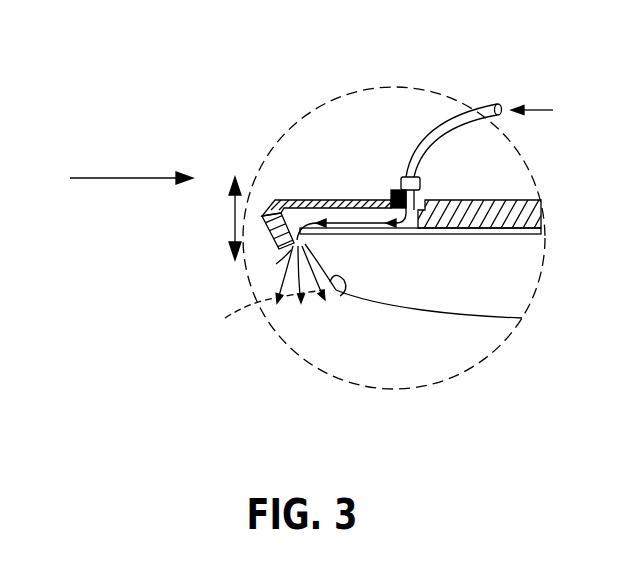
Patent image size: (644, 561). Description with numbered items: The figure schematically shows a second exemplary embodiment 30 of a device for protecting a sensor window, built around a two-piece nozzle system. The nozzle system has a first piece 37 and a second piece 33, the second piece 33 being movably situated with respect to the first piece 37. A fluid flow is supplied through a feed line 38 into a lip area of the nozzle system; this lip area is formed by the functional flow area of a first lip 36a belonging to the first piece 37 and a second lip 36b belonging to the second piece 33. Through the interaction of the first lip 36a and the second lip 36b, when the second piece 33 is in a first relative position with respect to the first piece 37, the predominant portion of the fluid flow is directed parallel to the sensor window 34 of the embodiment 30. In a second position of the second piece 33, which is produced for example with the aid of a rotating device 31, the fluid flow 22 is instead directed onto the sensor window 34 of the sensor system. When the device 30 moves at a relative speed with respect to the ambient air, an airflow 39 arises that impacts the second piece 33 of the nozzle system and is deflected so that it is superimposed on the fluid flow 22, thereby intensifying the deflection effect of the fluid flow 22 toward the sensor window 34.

The fluid flow 22 is at (260, 321).
The second exemplary embodiment 30 is at (270, 162).
The rotating device 31 is at (391, 194).
The second piece 33 is at (267, 227).
The sensor window 34 is at (338, 298).
The first lip 36a is at (307, 241).
The second lip 36b is at (290, 250).
The first piece 37 is at (423, 302).
The feed line 38 is at (428, 128).
The airflow 39 is at (109, 183).